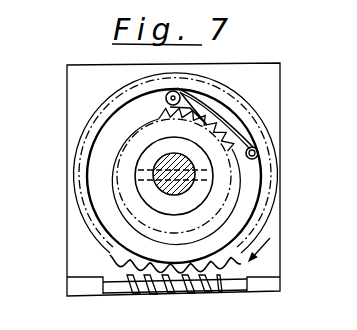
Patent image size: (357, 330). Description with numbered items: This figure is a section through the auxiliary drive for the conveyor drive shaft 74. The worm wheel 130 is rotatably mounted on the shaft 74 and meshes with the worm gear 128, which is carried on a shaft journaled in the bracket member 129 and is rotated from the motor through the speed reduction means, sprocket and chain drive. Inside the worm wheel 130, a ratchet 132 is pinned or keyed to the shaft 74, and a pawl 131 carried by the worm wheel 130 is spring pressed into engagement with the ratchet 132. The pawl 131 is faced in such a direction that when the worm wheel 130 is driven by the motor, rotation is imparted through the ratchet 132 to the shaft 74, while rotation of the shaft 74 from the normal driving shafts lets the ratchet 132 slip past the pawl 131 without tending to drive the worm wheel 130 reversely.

The conveyor drive shaft 74 is at (167, 197).
The worm gear 128 is at (173, 296).
The bracket member 129 is at (76, 264).
The worm wheel 130 is at (90, 238).
The pawl 131 is at (170, 107).
The ratchet 132 is at (142, 122).